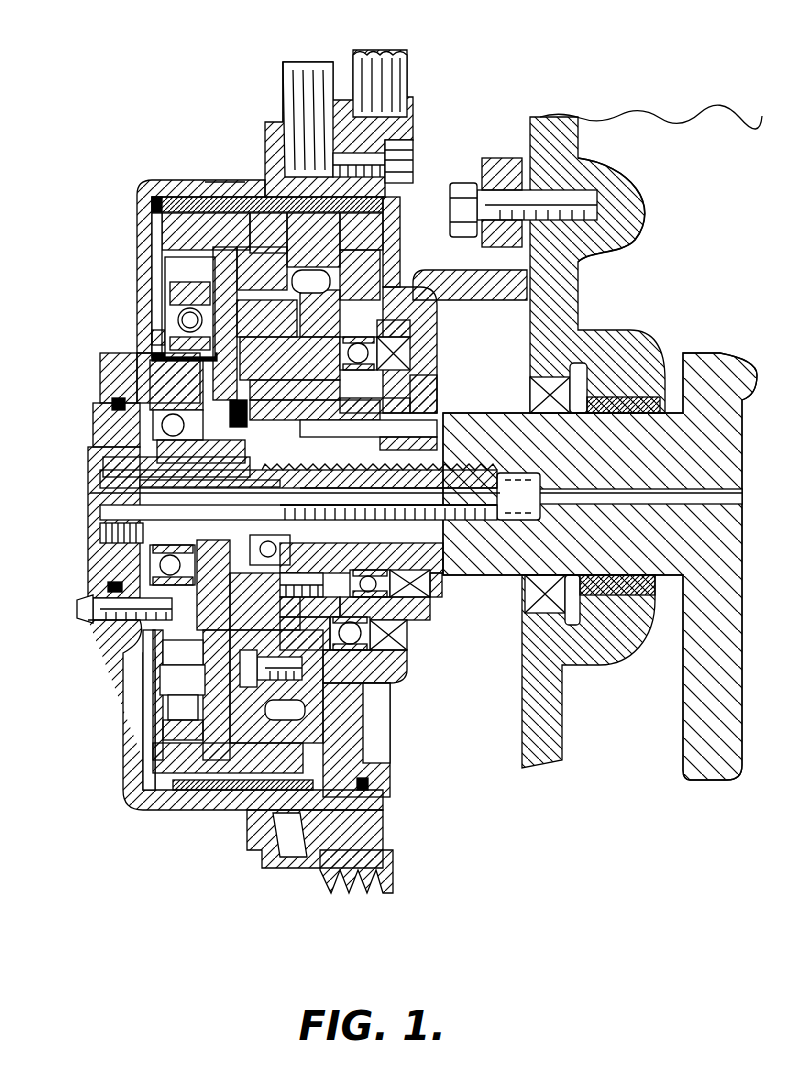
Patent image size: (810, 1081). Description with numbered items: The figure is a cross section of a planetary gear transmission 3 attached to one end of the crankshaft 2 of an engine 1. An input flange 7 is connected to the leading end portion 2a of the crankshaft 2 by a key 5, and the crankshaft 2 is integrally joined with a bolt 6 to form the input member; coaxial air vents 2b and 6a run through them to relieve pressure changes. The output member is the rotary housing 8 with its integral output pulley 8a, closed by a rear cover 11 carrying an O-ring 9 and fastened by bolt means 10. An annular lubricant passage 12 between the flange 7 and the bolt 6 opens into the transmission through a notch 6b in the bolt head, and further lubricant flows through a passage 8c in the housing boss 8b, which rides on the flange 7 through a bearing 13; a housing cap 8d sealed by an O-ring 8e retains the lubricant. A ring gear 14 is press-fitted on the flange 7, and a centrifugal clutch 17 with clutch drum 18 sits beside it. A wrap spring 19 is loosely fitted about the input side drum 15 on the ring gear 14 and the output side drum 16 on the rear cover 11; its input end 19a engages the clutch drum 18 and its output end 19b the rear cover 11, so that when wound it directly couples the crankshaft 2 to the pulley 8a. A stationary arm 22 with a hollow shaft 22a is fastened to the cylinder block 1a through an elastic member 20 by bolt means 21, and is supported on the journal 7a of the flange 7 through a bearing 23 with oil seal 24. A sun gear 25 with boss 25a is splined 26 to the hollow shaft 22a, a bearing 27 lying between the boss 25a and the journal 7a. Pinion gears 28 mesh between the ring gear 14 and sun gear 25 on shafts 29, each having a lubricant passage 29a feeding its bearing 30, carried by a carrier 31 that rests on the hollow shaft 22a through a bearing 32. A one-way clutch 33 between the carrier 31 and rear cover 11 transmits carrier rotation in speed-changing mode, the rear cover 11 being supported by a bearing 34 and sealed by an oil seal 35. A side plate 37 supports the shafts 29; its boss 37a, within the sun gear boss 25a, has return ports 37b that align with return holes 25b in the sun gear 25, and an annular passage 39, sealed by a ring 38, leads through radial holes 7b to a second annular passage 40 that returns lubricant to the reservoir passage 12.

The engine 1 is at (656, 117).
The engine cylinder block 1a is at (557, 282).
The crankshaft 2 is at (631, 468).
The leading end portion of the crankshaft 2a is at (398, 491).
The air vent 2b is at (638, 500).
The transmission 3 is at (172, 60).
The key 5 is at (468, 472).
The bolt 6 is at (117, 462).
The air vent 6a is at (518, 496).
The notch 6b is at (100, 425).
The input flange 7 is at (138, 484).
The journal 7a is at (400, 546).
The radial lubricant holes 7b is at (283, 497).
The transmission rotary housing 8 is at (137, 200).
The transmission output pulley 8a is at (300, 95).
The rotary housing boss 8b is at (135, 360).
The lubricant passage 8c is at (108, 357).
The housing cap 8d is at (110, 400).
The O-ring 8e is at (104, 588).
The O-ring 9 is at (368, 785).
The bolt means 10 is at (405, 172).
The rear cover 11 is at (397, 225).
The annular lubricant passage 12 is at (240, 493).
The bearing 13 is at (158, 563).
The ring gear 14 is at (230, 192).
The input side drum 15 is at (187, 220).
The output side drum 16 is at (263, 188).
The centrifugal clutch 17 is at (170, 310).
The clutch drum 18 is at (155, 335).
The wrap spring 19 is at (200, 192).
The input end 19a is at (160, 192).
The output end 19b is at (292, 140).
The elastic member 20 is at (480, 158).
The bolt means 21 is at (560, 178).
The stationary arm 22 is at (440, 330).
The hollow shaft 22a is at (440, 382).
The bearing 23 is at (407, 607).
The oil seal 24 is at (430, 582).
The sun gear 25 is at (142, 648).
The boss portion 25a is at (325, 557).
The radial lubricant return holes 25b is at (265, 427).
The splines 26 is at (395, 628).
The bearing 27 is at (412, 407).
The pinion gears 28 is at (225, 268).
The pinion shafts 29 is at (305, 285).
The lubricant passage 29a is at (403, 290).
The bearings 30 is at (296, 275).
The carrier 31 is at (392, 330).
The bearing 32 is at (390, 670).
The one-way clutch 33 is at (340, 262).
The bearing 34 is at (423, 340).
The oil seal 35 is at (405, 357).
The side plate 37 is at (232, 380).
The boss 37a is at (437, 443).
The lubricant return ports 37b is at (283, 503).
The O-ring or square ring 38 is at (240, 565).
The annular lubricant passage 39 is at (157, 517).
The second annular lubricant passage 40 is at (268, 545).